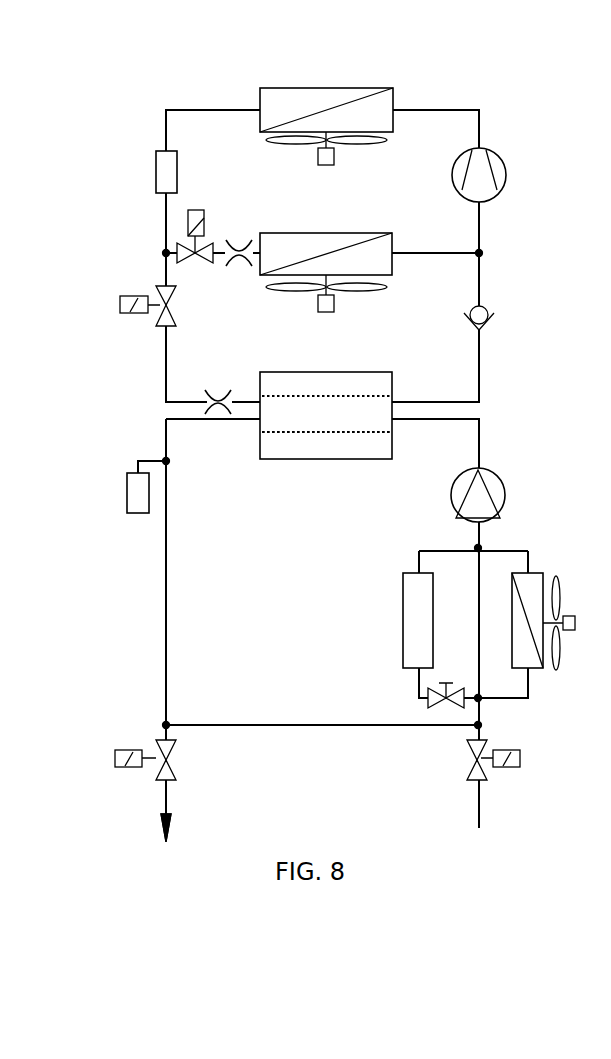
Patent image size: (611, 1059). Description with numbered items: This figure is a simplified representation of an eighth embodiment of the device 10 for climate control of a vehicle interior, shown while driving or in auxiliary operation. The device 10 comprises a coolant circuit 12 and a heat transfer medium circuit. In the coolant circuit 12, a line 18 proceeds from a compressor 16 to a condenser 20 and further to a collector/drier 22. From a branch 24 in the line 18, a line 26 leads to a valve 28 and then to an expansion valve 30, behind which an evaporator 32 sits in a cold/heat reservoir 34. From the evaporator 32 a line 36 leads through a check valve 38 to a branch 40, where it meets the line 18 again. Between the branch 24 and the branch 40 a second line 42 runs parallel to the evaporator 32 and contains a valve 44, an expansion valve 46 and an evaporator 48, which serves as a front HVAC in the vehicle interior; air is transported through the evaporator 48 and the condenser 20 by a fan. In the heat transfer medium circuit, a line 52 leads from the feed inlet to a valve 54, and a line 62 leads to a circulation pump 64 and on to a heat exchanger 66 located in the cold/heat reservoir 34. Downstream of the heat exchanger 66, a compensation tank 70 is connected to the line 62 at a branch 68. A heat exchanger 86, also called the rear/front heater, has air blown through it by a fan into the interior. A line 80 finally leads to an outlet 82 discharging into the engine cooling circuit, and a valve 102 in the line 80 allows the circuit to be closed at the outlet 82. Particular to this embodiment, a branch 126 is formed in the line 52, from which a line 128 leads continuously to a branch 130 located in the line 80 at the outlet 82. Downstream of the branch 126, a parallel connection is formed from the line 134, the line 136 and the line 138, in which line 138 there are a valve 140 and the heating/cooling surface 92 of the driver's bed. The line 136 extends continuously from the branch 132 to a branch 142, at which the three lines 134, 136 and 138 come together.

The device 10 is at (148, 98).
The coolant circuit 12 is at (490, 230).
The compressor 16 is at (498, 166).
The line 18 is at (440, 105).
The condenser 20 is at (342, 96).
The collector/drier 22 is at (163, 170).
The branch 24 is at (162, 253).
The line 26 is at (165, 360).
The valve 28 is at (152, 314).
The expansion valve 30 is at (212, 390).
The evaporator 32 is at (360, 395).
The cold/heat reservoir 34 is at (400, 386).
The line 36 is at (482, 358).
The check valve 38 is at (487, 308).
The branch 40 is at (482, 253).
The second line 42 is at (437, 255).
The valve 44 is at (180, 245).
The expansion valve 46 is at (238, 232).
The evaporator 48 is at (356, 250).
The line 52 is at (534, 809).
The valve 54 is at (472, 757).
The line 62 is at (481, 528).
The circulation pump 64 is at (495, 483).
The heat exchanger 66 is at (350, 433).
The branch 68 is at (164, 461).
The compensation tank 70 is at (137, 496).
The line 80 is at (163, 800).
The outlet 82 is at (160, 826).
The heat exchanger 86 is at (540, 670).
The heating/cooling surface 92 is at (410, 607).
The valve 102 is at (180, 760).
The branch 126 is at (482, 735).
The line 128 is at (326, 732).
The branch 130 is at (163, 725).
The branch 132 is at (481, 716).
The line 134 is at (482, 700).
The line 136 is at (478, 572).
The line 138 is at (418, 688).
The valve 140 is at (440, 712).
The branch 142 is at (481, 548).